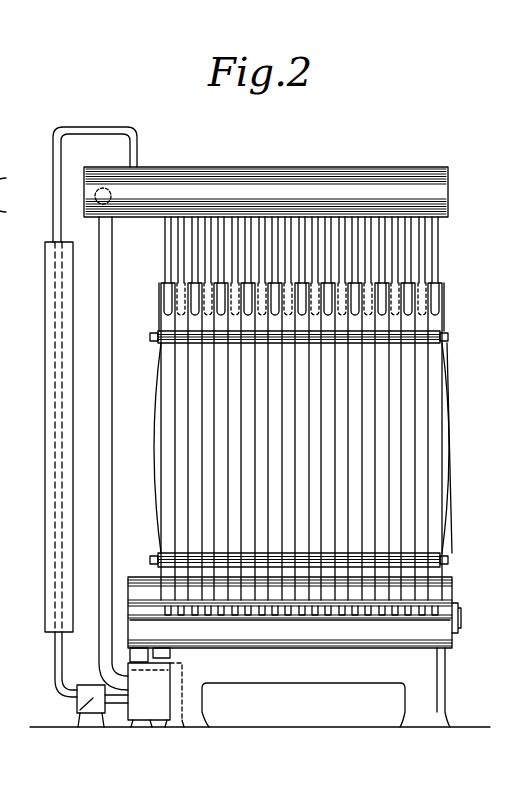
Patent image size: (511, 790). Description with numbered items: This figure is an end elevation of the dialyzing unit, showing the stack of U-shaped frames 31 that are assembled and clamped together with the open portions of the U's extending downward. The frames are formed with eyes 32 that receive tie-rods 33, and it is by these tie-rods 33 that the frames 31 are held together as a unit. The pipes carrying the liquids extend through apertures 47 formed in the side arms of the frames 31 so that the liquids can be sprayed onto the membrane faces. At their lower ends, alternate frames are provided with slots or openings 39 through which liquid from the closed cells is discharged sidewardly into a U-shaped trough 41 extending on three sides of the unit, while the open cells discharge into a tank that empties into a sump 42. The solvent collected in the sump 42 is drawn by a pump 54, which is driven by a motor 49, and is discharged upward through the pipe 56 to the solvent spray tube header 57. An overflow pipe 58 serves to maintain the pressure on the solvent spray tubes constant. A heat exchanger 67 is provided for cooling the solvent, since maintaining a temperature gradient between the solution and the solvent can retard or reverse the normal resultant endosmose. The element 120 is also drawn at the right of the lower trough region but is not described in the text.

The solvent spray tube header 57 is at (5, 182).
The pipe 56 is at (63, 166).
The heat exchanger 67 is at (48, 540).
The overflow pipe 58 is at (108, 473).
The U-shaped frames 31 is at (203, 476).
The apertures 47 is at (430, 313).
The tie-rods 33 is at (156, 336).
The eyes 32 is at (432, 345).
The slots or openings 39 is at (300, 610).
The U-shaped trough 41 is at (290, 620).
The valve 120 is at (458, 622).
The motor 49 is at (118, 656).
The sump 42 is at (156, 695).
The pump 54 is at (74, 708).